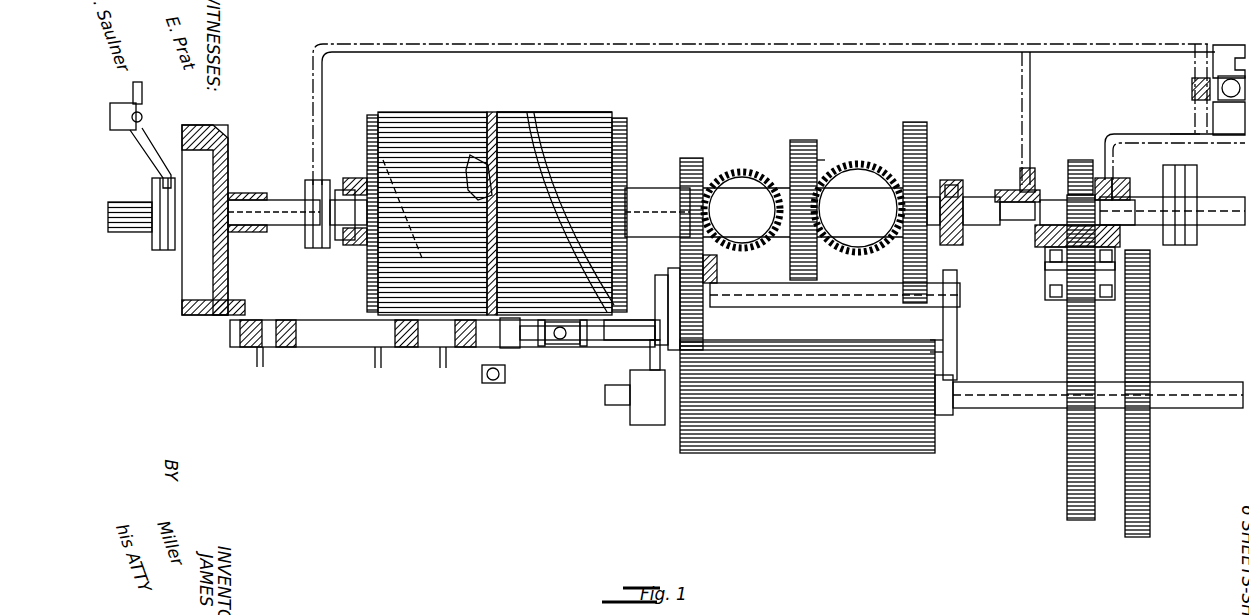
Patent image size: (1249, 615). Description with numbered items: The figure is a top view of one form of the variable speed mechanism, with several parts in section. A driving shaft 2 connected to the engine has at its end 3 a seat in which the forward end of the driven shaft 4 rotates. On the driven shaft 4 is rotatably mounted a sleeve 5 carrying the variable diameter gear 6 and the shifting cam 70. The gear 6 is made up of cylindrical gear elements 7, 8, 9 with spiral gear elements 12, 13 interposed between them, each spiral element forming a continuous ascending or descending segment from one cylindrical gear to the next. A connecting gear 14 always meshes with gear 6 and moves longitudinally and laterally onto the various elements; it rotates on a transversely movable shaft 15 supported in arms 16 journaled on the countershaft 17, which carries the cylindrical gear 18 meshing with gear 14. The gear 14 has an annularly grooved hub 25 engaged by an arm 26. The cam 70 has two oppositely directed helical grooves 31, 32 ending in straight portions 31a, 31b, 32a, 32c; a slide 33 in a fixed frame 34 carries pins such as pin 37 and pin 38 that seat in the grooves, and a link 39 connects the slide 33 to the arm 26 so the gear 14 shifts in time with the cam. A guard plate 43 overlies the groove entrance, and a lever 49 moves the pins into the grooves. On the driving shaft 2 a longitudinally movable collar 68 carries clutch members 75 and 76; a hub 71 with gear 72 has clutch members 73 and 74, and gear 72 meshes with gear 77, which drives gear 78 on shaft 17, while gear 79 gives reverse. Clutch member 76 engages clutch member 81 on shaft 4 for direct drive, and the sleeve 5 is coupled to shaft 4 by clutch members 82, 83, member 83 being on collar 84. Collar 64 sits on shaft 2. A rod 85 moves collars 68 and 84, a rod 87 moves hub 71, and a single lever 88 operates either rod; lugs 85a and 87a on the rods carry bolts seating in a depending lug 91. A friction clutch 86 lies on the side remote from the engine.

The driving shaft 2 is at (1220, 197).
The end of driving shaft 3 is at (978, 197).
The driven shaft 4 is at (287, 200).
The sleeve 5 is at (648, 186).
The variable diameter gear 6 is at (820, 165).
The cylindrical gear element 7 is at (691, 158).
The cylindrical gear element 8 is at (798, 141).
The cylindrical gear element 9 is at (916, 122).
The spiral gear element 12 is at (741, 152).
The spiral gear element 13 is at (860, 140).
The connecting gear 14 is at (712, 268).
The transversely movable shaft 15 is at (920, 285).
The arms 16 is at (650, 352).
The countershaft 17 is at (1010, 408).
The cylindrical gear 18 is at (800, 453).
The annularly grooved hub 25 is at (259, 362).
The arm 26 is at (672, 268).
The helical groove 31 is at (493, 165).
The straight portion of groove 31a is at (491, 115).
The straight portion of groove 31b is at (372, 118).
The helical groove 32 is at (572, 118).
The straight portion of groove 32a is at (532, 120).
The drum flange 32c is at (618, 120).
The slide 33 is at (330, 340).
The fixed frame 34 is at (602, 340).
The pin 37 is at (365, 372).
The pin 38 is at (508, 352).
The link 39 is at (568, 345).
The guard plate 43 is at (470, 160).
The lever 49 is at (492, 383).
The hub 64 is at (1178, 190).
The clutch member or collar 68 is at (1030, 183).
The shifting cam 70 is at (505, 115).
The hub 71 is at (1102, 180).
The gear 72 is at (1080, 162).
The clutch member 73 is at (1040, 240).
The clutch member 74 is at (1122, 185).
The clutch member 75 is at (1050, 250).
The clutch member 76 is at (1002, 190).
The gear 77 is at (1113, 262).
The gear 78 is at (1070, 347).
The gear 79 is at (1150, 313).
The clutch member 81 is at (950, 183).
The clutch member 82 is at (350, 178).
The clutch member 83 is at (340, 242).
The collar 84 is at (305, 246).
The rod 85 is at (782, 50).
The lug 85a is at (1195, 62).
The friction clutch 86 is at (200, 132).
The rod 87 is at (1145, 134).
The lug 87a is at (1186, 121).
The lever 88 is at (1228, 72).
The depending lug 91 is at (1192, 88).